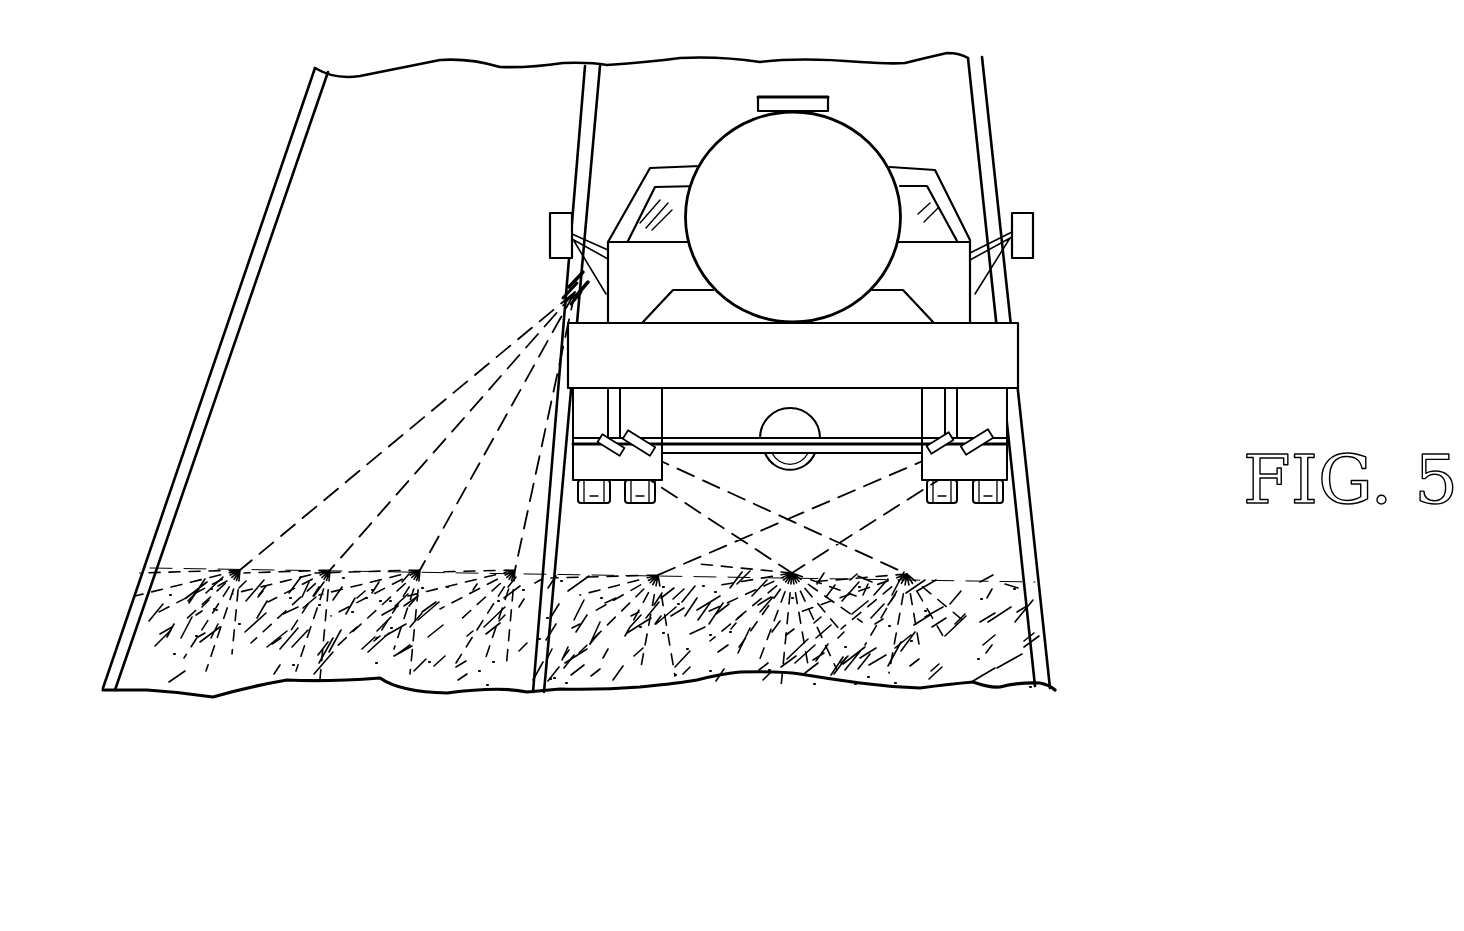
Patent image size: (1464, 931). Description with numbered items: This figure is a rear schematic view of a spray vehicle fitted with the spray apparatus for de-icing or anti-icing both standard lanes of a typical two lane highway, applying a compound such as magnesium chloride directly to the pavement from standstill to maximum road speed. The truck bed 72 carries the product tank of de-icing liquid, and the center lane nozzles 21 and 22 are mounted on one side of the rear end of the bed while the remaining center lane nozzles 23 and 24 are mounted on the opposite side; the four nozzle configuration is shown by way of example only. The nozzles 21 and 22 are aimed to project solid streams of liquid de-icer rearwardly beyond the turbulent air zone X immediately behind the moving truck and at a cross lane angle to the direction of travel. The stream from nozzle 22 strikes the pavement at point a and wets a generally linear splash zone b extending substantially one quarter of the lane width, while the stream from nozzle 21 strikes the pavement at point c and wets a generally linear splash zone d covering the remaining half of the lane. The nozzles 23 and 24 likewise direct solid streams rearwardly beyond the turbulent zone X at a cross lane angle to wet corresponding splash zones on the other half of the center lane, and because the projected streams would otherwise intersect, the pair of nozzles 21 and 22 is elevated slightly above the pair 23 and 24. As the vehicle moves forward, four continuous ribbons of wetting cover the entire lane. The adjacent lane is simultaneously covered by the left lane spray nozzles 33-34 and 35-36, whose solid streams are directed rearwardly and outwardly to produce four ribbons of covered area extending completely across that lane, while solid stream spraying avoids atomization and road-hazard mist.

The center lane nozzle 21 is at (615, 434).
The center lane nozzle 22 is at (643, 433).
The center lane nozzle 23 is at (940, 432).
The center lane nozzle 24 is at (983, 436).
The truck bed 72 is at (1020, 347).
The left lane spray nozzles 33-34 is at (565, 282).
The left lane spray nozzles 35-36 is at (560, 297).
The turbulent air zone X is at (830, 477).
The point a is at (882, 606).
The splash zone b is at (1010, 585).
The point c is at (780, 608).
The splash zone d is at (868, 578).